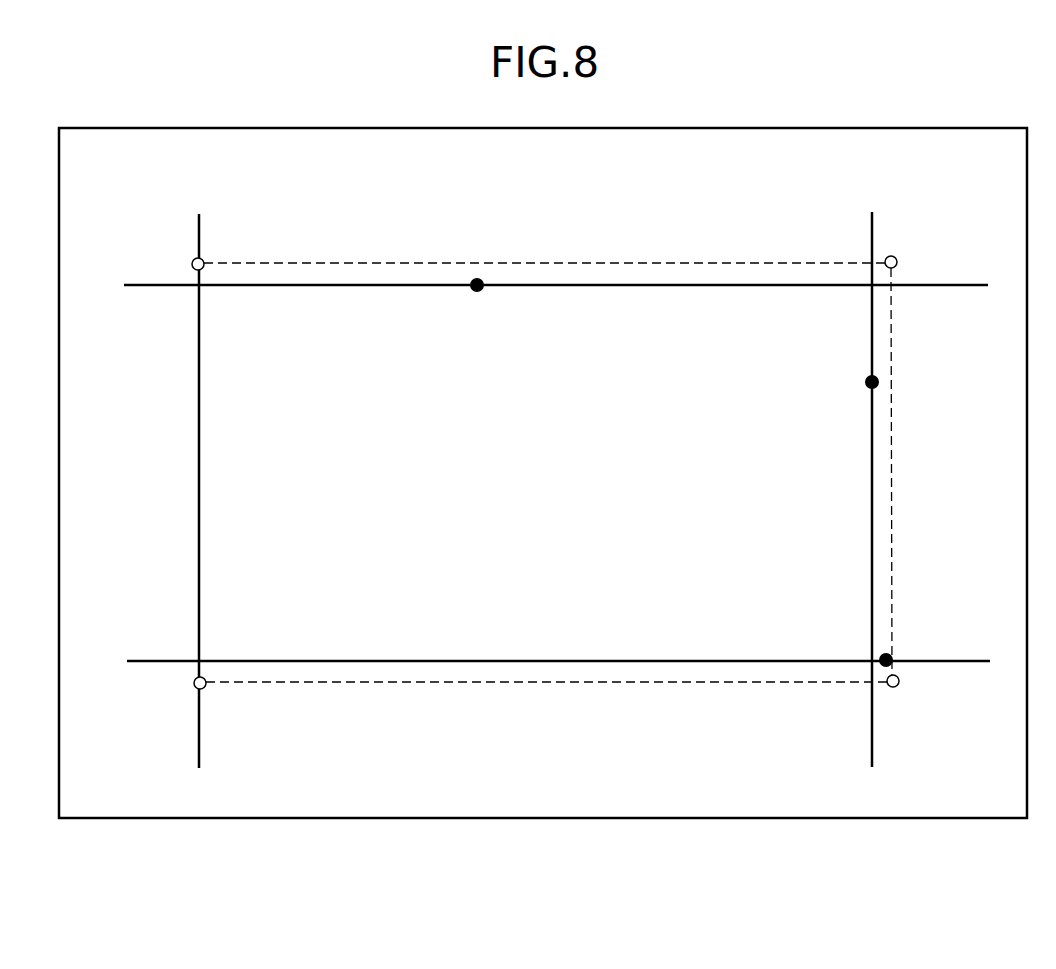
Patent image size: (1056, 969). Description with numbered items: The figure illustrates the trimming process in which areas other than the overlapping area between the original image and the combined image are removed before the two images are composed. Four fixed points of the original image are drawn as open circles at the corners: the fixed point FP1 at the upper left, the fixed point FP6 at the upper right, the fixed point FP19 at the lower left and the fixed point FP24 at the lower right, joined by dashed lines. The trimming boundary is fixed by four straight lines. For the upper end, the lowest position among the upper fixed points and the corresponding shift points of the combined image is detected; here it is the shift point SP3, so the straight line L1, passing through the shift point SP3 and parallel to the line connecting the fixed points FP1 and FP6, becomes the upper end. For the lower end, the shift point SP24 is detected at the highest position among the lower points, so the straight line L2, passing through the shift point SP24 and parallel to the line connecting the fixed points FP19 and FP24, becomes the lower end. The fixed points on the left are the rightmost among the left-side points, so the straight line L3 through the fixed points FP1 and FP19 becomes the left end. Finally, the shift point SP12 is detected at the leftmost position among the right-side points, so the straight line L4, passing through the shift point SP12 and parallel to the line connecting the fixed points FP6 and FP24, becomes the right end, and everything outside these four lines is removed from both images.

The straight line L1 is at (630, 287).
The straight line L2 is at (556, 659).
The straight line L3 is at (201, 470).
The straight line L4 is at (869, 511).
The shift point SP3 is at (477, 292).
The shift point SP12 is at (866, 381).
The shift point SP24 is at (888, 654).
The fixed point FP1 is at (203, 258).
The fixed point FP6 is at (896, 256).
The fixed point FP19 is at (205, 688).
The fixed point FP24 is at (898, 686).